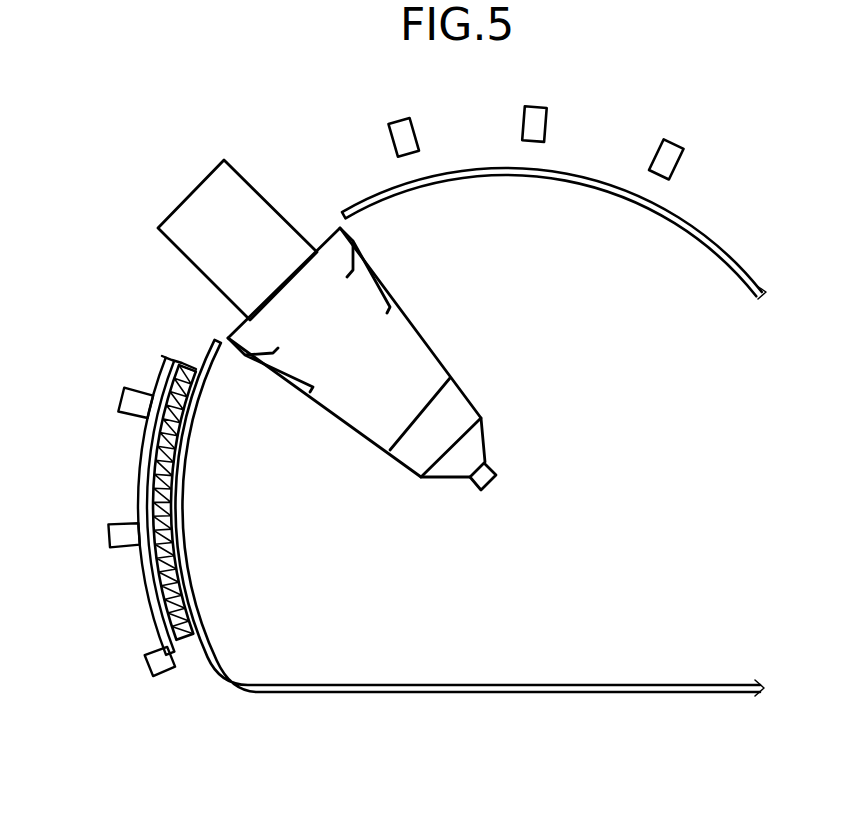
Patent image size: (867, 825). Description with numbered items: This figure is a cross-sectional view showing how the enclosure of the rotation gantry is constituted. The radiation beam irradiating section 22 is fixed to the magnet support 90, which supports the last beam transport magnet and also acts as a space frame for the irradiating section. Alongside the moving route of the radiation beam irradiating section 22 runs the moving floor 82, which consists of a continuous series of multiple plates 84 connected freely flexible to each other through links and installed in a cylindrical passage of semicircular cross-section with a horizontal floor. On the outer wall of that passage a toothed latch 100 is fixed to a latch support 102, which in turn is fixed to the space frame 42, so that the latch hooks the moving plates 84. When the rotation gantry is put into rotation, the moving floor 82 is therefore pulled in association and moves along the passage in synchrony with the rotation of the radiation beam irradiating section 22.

The radiation beam irradiating section 22 is at (413, 341).
The magnet support 90 is at (252, 186).
The moving floor 82 is at (356, 685).
The plates 84 is at (176, 372).
The space frame 42 is at (109, 538).
The toothed latch 100 is at (197, 650).
The latch support 102 is at (150, 603).